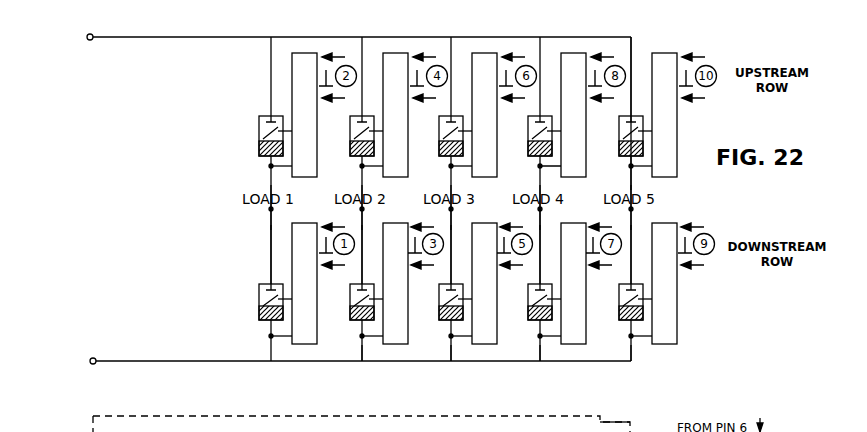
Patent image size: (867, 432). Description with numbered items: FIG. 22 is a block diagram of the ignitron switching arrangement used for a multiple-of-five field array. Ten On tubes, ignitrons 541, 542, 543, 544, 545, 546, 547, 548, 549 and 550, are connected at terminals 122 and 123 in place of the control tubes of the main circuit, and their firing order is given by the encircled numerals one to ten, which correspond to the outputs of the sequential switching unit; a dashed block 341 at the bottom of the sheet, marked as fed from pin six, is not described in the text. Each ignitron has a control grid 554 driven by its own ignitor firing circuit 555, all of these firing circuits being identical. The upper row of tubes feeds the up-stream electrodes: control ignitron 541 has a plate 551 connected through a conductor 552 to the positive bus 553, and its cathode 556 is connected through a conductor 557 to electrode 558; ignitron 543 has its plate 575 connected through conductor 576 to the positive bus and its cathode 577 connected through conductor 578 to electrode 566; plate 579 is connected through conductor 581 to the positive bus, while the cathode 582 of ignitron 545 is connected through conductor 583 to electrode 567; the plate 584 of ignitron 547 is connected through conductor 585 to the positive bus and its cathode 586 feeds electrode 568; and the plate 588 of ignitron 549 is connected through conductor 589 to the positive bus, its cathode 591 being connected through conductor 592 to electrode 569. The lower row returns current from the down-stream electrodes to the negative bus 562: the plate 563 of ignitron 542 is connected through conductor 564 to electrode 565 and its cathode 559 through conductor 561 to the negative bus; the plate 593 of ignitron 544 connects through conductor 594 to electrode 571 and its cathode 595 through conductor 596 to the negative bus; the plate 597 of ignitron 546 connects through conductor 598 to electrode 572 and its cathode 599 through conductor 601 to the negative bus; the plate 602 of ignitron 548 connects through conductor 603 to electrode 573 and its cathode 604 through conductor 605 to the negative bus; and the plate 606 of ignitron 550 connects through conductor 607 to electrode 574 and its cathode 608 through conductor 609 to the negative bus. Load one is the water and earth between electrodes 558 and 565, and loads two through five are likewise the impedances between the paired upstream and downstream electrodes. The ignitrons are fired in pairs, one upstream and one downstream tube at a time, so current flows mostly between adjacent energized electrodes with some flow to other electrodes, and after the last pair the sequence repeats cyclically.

The terminal 122 is at (91, 40).
The terminal 123 is at (94, 358).
The control circuit block 341 is at (622, 422).
The control ignitron 541 is at (259, 136).
The ignitron 542 is at (259, 302).
The ignitron 543 is at (350, 136).
The ignitron 544 is at (354, 337).
The ignitron 545 is at (440, 136).
The ignitron 546 is at (444, 335).
The ignitron 547 is at (529, 136).
The ignitron 548 is at (531, 335).
The ignitron 549 is at (619, 136).
The ignitron 550 is at (614, 321).
The plate 551 is at (268, 116).
The conductor 552 is at (271, 80).
The positive bus 553 is at (200, 37).
The control grid 554 is at (619, 302).
The ignitor firing circuit 555 is at (667, 344).
The cathode 556 is at (266, 166).
The conductor 557 is at (271, 180).
The electrode 558 is at (273, 181).
The cathode 559 is at (268, 322).
The conductor 561 is at (271, 351).
The negative bus 562 is at (257, 362).
The plate 563 is at (268, 286).
The conductor 564 is at (271, 245).
The electrode 565 is at (273, 209).
The electrode 566 is at (364, 181).
The electrode 567 is at (453, 181).
The electrode 568 is at (542, 181).
The electrode 569 is at (633, 181).
The electrode 571 is at (364, 209).
The electrode 572 is at (453, 209).
The electrode 573 is at (542, 209).
The electrode 574 is at (633, 209).
The plate 575 is at (359, 116).
The conductor 576 is at (362, 55).
The cathode 577 is at (360, 165).
The conductor 578 is at (362, 180).
The plate 579 is at (448, 116).
The conductor 581 is at (451, 55).
The cathode 582 is at (449, 165).
The conductor 583 is at (451, 180).
The plate 584 is at (537, 116).
The conductor 585 is at (540, 65).
The cathode 586 is at (538, 165).
The plate 588 is at (628, 116).
The conductor 589 is at (631, 60).
The cathode 591 is at (629, 165).
The conductor 592 is at (631, 180).
The plate 593 is at (360, 286).
The conductor 594 is at (362, 230).
The cathode 595 is at (346, 340).
The conductor 596 is at (364, 348).
The plate 597 is at (449, 286).
The conductor 598 is at (451, 230).
The cathode 599 is at (436, 340).
The conductor 601 is at (453, 348).
The plate 602 is at (538, 286).
The conductor 603 is at (540, 230).
The cathode 604 is at (538, 348).
The conductor 605 is at (542, 348).
The plate 606 is at (629, 286).
The conductor 607 is at (631, 230).
The cathode 608 is at (613, 340).
The conductor 609 is at (633, 350).